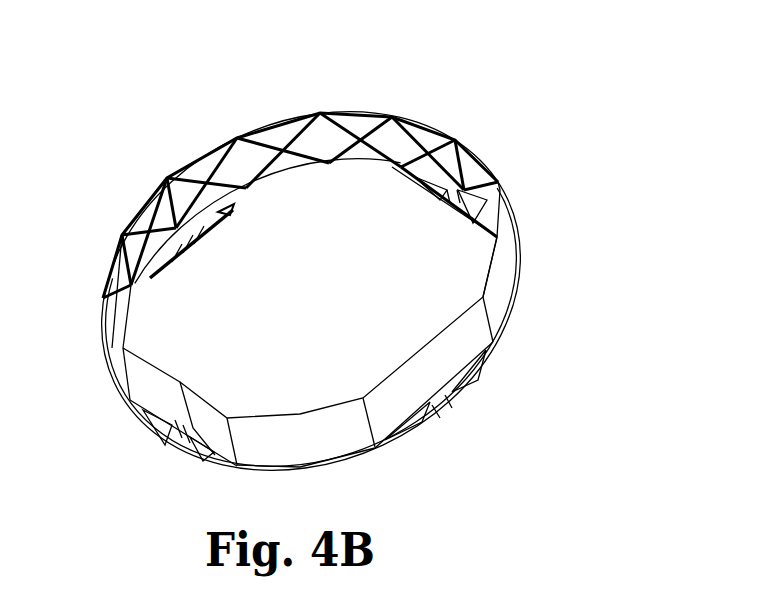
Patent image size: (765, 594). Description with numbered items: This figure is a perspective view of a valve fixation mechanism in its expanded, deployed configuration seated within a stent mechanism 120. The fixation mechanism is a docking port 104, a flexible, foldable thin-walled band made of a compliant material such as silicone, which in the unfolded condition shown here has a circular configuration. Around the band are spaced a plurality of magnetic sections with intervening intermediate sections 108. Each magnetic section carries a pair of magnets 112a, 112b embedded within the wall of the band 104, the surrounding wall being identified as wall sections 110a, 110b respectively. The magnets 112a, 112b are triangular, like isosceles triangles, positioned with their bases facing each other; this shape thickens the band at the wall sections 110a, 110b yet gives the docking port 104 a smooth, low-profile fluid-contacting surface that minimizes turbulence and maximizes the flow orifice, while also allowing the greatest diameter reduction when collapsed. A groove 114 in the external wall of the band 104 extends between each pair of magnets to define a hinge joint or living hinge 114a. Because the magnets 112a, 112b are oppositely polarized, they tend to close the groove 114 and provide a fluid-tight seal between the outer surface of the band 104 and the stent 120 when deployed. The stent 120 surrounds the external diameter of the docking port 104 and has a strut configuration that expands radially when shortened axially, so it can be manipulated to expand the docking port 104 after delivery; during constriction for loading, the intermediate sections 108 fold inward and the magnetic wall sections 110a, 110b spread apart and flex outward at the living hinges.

The docking port 104 is at (362, 119).
The intermediate sections 108 is at (307, 443).
The wall section 110a is at (213, 440).
The wall section 110b is at (147, 387).
The magnet 112a is at (170, 257).
The magnet 112b is at (217, 207).
The groove 114 is at (456, 407).
The living hinge 114a is at (425, 367).
The stent mechanism 120 is at (493, 180).